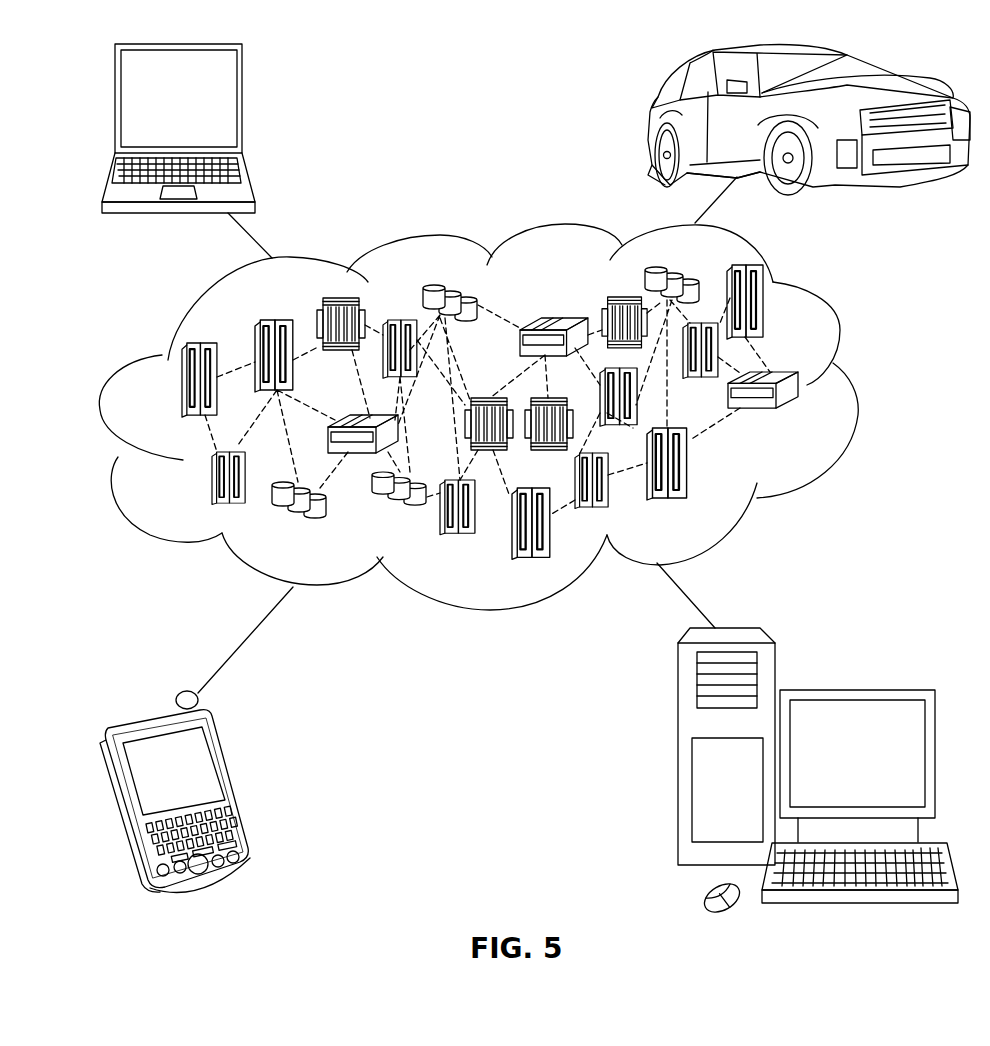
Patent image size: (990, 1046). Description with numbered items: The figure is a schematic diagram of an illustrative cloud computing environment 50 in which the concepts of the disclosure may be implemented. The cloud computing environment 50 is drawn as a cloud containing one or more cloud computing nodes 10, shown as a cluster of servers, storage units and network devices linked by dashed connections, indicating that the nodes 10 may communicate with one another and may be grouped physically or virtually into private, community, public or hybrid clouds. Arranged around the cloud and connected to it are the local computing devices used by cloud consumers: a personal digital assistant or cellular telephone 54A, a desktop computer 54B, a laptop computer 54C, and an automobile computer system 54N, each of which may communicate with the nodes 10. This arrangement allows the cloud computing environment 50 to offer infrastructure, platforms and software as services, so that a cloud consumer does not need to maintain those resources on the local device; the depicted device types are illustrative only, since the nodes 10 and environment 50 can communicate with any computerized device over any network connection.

The cloud computing nodes 10 is at (802, 423).
The cloud computing environment 50 is at (855, 390).
The personal digital assistant (PDA) or cellular telephone 54A is at (234, 785).
The desktop computer 54B is at (853, 689).
The laptop computer 54C is at (244, 103).
The automobile computer system 54N is at (652, 121).